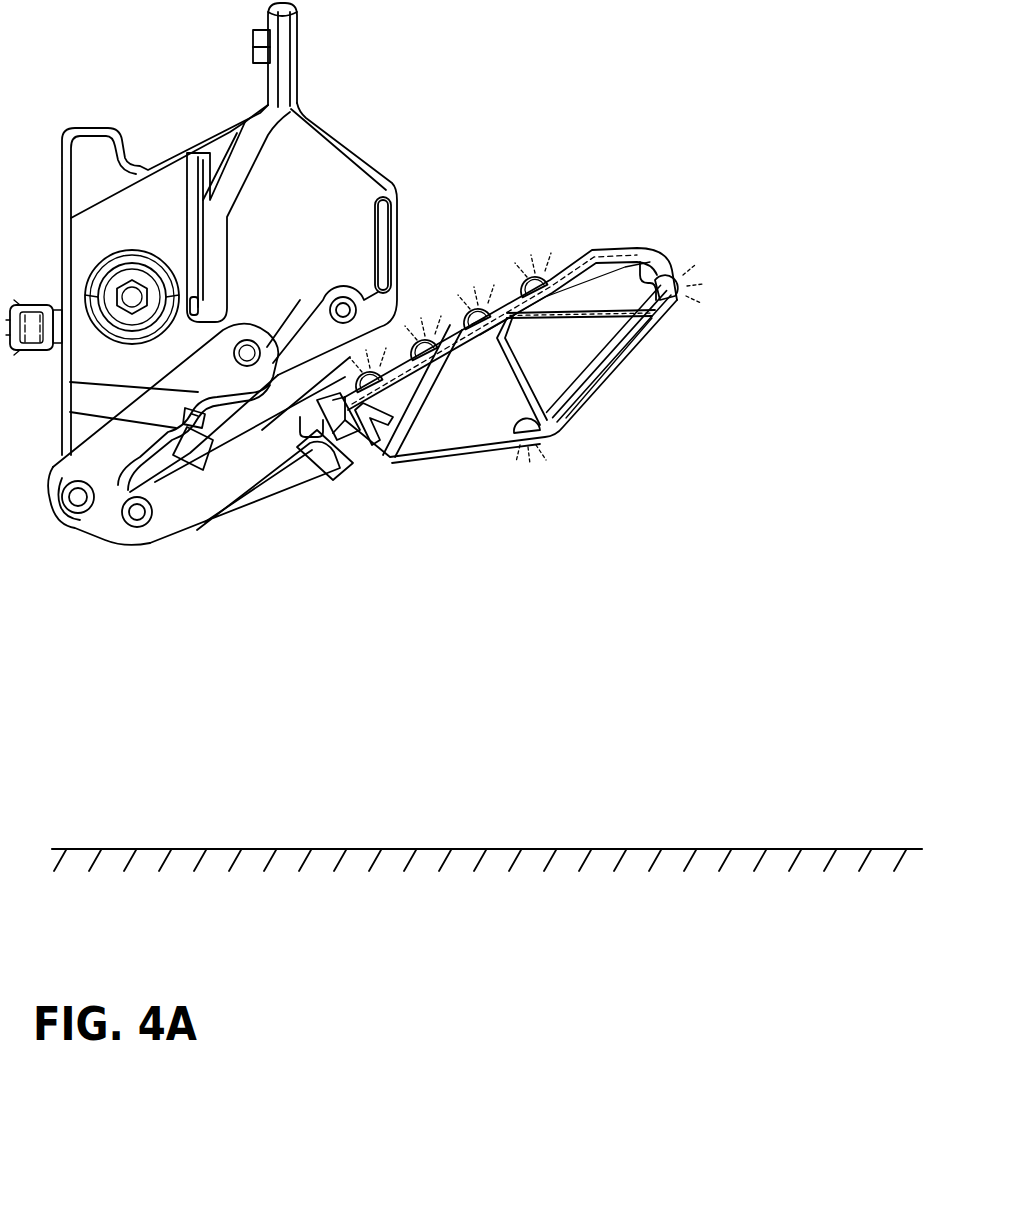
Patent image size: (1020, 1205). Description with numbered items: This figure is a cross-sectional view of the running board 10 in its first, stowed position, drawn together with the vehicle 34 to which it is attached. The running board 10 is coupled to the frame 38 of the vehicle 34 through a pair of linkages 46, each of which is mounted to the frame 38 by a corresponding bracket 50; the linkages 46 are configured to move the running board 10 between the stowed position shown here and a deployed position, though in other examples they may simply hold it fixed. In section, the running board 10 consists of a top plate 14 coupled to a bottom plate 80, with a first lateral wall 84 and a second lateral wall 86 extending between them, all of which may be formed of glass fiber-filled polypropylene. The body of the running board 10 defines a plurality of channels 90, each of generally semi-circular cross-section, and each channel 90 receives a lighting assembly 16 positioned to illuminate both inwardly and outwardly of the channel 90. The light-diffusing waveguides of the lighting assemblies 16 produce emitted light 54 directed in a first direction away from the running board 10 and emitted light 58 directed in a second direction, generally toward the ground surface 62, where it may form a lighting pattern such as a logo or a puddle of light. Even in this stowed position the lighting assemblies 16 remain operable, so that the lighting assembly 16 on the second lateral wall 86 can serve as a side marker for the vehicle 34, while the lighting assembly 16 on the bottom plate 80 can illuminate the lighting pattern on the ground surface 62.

The running board 10 is at (634, 150).
The top plate 14 is at (577, 258).
The lighting assembly 16 is at (552, 270).
The vehicle 34 is at (137, 112).
The frame 38 is at (305, 175).
The linkage 46 is at (102, 472).
The bracket 50 is at (252, 338).
The emitted light 54 is at (483, 285).
The emitted light 58 is at (693, 285).
The ground surface 62 is at (781, 849).
The bottom plate 80 is at (618, 387).
The first lateral wall 84 is at (358, 447).
The second lateral wall 86 is at (666, 268).
The channel 90 is at (624, 252).